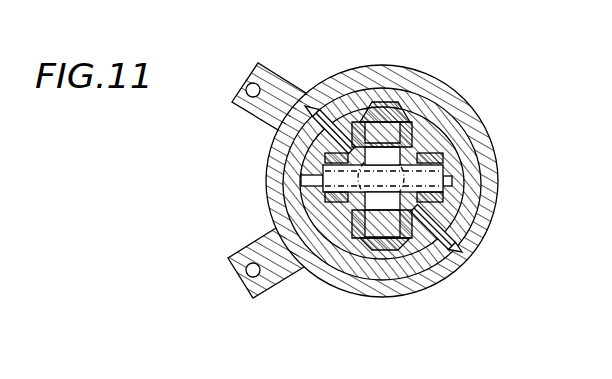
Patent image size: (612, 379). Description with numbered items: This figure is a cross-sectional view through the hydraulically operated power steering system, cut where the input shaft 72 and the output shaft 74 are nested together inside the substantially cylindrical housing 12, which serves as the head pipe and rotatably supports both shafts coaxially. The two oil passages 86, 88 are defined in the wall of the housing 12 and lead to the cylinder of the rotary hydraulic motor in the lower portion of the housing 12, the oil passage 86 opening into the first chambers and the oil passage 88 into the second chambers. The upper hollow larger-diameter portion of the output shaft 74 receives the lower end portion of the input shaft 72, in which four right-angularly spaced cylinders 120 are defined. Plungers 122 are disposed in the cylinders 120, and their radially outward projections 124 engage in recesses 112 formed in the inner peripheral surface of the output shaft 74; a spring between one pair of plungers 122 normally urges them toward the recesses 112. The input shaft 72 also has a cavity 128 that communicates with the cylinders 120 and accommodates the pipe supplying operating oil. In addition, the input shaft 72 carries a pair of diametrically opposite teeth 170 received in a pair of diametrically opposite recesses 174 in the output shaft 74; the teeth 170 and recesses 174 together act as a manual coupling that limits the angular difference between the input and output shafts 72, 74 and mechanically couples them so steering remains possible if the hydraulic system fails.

The housing 12 is at (484, 131).
The input shaft 72 is at (483, 128).
The output shaft 74 is at (440, 95).
The oil passage 86 is at (250, 82).
The oil passage 88 is at (245, 283).
The recess 112 is at (297, 179).
The cylinder 120 is at (410, 263).
The plunger 122 is at (306, 157).
The radially outward projection 124 is at (296, 200).
The cavity 128 is at (311, 264).
The tooth 170 is at (470, 254).
The recess 174 is at (444, 250).